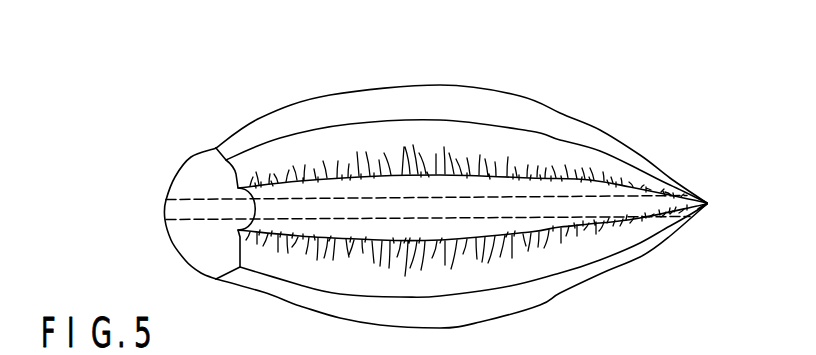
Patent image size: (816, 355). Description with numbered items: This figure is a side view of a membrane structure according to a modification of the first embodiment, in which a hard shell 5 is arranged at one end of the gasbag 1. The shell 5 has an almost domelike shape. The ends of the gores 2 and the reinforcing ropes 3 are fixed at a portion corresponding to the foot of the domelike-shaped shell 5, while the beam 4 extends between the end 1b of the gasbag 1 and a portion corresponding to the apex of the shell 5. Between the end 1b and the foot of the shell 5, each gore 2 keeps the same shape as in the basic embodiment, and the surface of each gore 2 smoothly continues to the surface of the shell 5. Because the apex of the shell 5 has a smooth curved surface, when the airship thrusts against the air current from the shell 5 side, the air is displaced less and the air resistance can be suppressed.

The gasbag 1 is at (432, 56).
The end of the gasbag 1b is at (707, 202).
The gore 2 is at (480, 108).
The reinforcing rope 3 is at (281, 238).
The beam 4 is at (527, 218).
The hard shell 5 is at (170, 241).